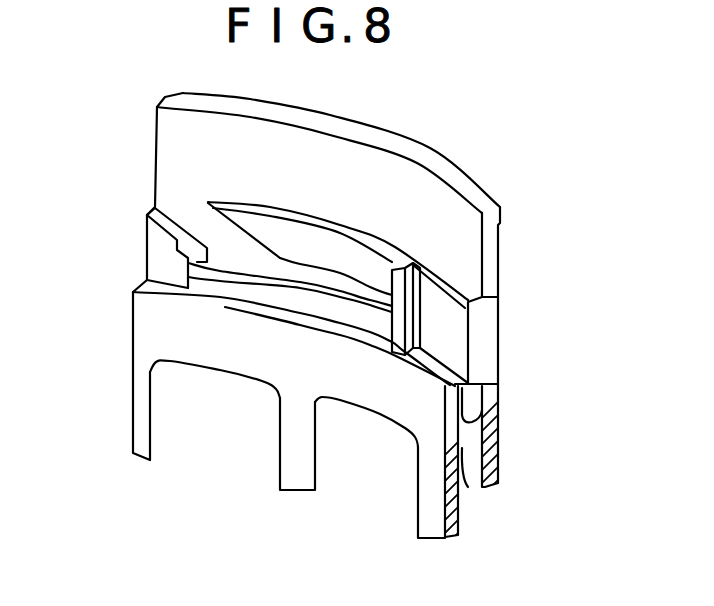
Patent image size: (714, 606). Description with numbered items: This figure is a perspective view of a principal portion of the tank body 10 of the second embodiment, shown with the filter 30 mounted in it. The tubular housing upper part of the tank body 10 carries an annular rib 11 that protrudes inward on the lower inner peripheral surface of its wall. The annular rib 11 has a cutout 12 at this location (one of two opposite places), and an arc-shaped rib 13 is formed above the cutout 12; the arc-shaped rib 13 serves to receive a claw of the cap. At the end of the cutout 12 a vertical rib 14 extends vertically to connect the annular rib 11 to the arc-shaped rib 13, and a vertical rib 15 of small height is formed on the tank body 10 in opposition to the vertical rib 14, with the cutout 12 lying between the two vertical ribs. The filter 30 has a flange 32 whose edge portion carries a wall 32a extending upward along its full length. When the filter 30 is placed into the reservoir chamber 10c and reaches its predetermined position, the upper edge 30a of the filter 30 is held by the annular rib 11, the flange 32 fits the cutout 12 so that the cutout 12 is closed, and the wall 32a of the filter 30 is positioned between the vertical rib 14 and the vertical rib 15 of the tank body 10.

The tank body 10 is at (486, 172).
The reservoir chamber 10c is at (472, 433).
The annular rib 11 is at (465, 405).
The cutout 12 is at (197, 262).
The arc-shaped rib 13 is at (327, 257).
The vertical rib 14 is at (410, 325).
The vertical rib 15 is at (180, 256).
The filter 30 is at (462, 511).
The upper edge 30a is at (470, 390).
The flange 32 is at (343, 337).
The wall 32a is at (333, 307).